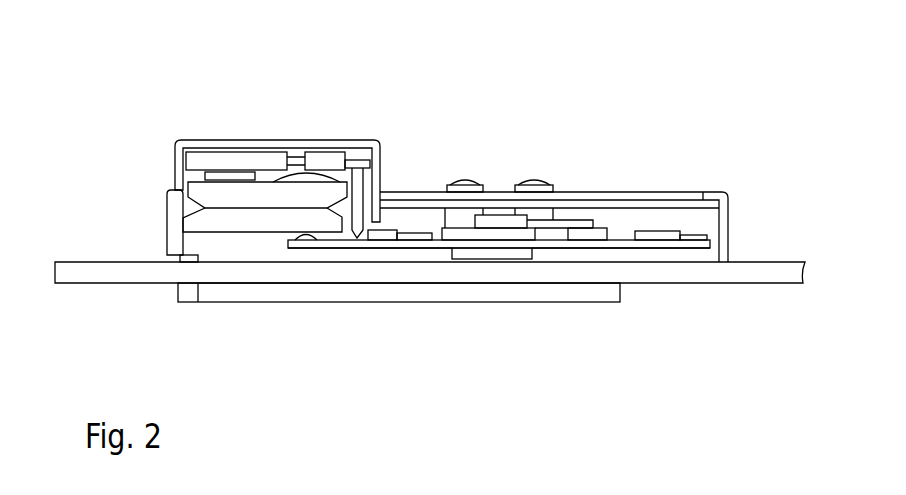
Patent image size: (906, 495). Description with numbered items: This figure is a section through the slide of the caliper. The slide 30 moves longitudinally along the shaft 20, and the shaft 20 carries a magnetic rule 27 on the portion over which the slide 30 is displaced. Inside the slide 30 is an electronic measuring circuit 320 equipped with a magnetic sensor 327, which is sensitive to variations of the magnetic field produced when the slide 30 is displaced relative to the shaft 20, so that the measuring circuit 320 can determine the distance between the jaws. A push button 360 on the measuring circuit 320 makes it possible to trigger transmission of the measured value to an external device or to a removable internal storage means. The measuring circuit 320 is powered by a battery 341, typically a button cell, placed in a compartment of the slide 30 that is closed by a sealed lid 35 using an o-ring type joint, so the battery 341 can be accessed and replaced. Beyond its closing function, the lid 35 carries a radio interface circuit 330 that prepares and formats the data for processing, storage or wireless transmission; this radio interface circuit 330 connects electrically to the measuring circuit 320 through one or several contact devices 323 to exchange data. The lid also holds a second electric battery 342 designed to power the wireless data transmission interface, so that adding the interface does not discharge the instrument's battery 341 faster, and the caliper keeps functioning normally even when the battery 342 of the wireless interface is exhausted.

The shaft 20 is at (658, 275).
The magnetic rule 27 is at (419, 262).
The slide 30 is at (293, 303).
The sealed lid 35 is at (300, 140).
The electronic measuring circuit 320 is at (687, 245).
The contact device 323 is at (357, 188).
The magnetic sensor 327 is at (517, 253).
The radio interface circuit 330 is at (248, 162).
The battery 341 is at (213, 220).
The second electric battery 342 is at (207, 193).
The push button 360 is at (532, 182).